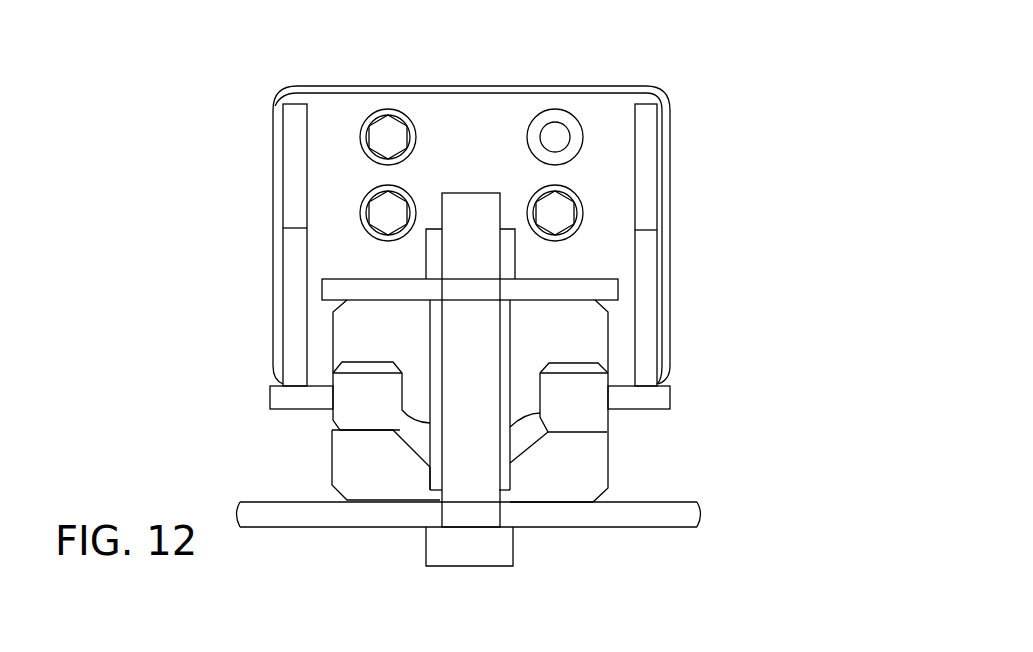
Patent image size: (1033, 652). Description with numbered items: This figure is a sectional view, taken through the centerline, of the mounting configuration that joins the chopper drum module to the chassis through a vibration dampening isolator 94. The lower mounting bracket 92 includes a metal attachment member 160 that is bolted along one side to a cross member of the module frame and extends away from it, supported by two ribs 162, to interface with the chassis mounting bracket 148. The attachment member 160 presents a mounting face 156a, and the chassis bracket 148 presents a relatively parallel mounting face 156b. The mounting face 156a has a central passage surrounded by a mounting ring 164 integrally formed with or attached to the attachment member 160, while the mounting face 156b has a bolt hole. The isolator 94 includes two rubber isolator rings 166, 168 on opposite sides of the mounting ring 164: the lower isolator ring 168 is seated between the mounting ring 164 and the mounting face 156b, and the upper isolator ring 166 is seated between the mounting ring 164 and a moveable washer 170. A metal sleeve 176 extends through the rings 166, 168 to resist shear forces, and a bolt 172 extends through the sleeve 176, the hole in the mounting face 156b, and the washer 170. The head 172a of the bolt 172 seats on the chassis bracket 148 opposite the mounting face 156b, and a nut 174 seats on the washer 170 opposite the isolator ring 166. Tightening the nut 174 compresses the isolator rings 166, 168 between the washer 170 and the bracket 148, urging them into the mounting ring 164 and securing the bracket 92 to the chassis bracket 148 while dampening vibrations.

The lower mounting bracket 92 is at (258, 132).
The isolator 94 is at (240, 389).
The chassis mounting bracket 148 is at (663, 517).
The mounting face 156a is at (648, 414).
The mounting face 156b is at (290, 495).
The attachment member 160 is at (327, 133).
The ribs 162 is at (293, 183).
The mounting ring 164 is at (578, 408).
The upper isolator ring 166 is at (343, 320).
The lower isolator ring 168 is at (358, 455).
The moveable washer 170 is at (562, 287).
The bolt 172 is at (470, 193).
The head 172a is at (477, 557).
The nut 174 is at (432, 222).
The sleeve 176 is at (510, 326).